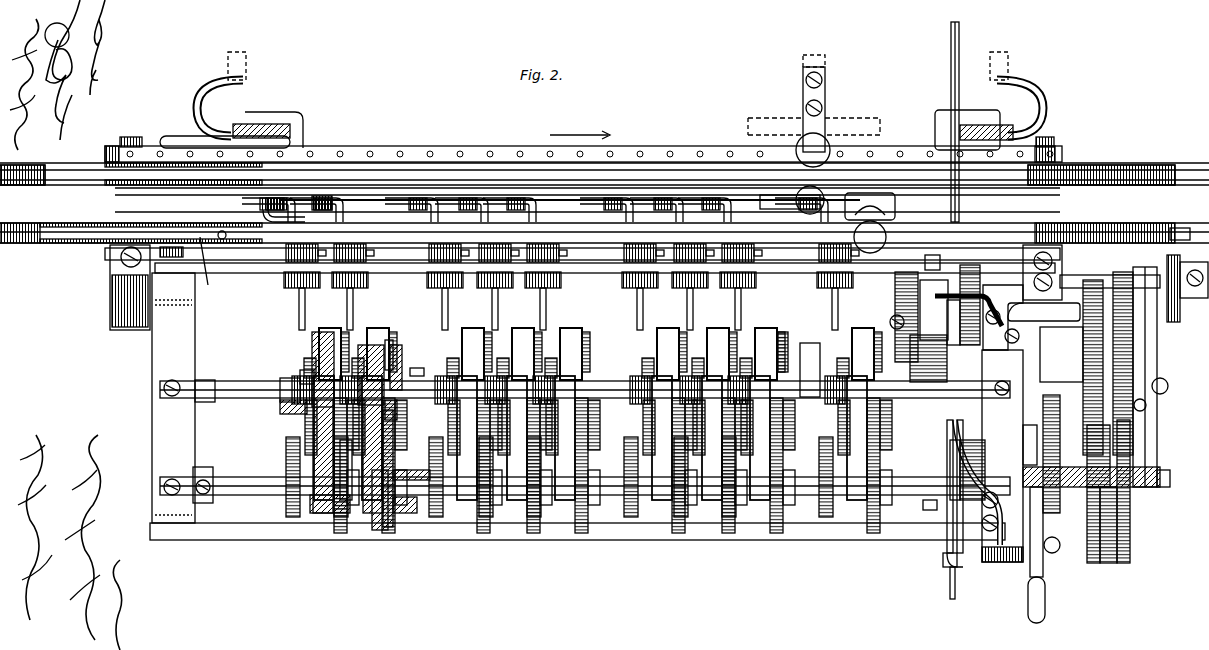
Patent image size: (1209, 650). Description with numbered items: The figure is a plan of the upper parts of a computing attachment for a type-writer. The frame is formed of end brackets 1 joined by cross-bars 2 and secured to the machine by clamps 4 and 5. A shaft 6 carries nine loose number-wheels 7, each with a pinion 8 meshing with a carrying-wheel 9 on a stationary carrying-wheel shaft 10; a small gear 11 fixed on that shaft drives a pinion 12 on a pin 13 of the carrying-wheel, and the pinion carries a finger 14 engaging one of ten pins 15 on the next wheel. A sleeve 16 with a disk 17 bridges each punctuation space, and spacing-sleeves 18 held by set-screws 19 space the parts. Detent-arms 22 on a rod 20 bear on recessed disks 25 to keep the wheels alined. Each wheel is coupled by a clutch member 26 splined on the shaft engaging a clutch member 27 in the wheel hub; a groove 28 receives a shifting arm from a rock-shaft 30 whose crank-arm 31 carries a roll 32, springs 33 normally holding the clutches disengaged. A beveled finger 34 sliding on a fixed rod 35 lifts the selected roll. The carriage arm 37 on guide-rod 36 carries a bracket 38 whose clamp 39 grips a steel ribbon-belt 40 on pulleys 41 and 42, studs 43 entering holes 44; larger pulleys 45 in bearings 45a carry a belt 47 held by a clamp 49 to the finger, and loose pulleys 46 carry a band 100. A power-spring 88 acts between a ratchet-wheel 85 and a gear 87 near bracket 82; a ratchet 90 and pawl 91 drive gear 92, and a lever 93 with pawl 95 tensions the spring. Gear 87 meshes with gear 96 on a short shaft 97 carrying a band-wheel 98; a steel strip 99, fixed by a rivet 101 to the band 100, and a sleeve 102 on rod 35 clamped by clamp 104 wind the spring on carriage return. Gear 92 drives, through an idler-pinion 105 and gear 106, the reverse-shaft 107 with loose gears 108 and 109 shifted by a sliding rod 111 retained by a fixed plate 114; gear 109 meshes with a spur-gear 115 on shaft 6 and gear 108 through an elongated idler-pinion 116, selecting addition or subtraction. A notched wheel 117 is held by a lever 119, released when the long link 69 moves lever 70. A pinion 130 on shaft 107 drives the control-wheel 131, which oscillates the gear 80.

The bracket 1 is at (587, 417).
The cross-bar 2 is at (262, 268).
The clamp 4 is at (300, 125).
The clamp 5 is at (938, 112).
The shaft 6 is at (282, 380).
The number-wheel 7 is at (320, 340).
The pinion 8 is at (345, 330).
The carrying-wheel 9 is at (410, 445).
The carrying-wheel shaft 10 is at (250, 480).
The small gear 11 is at (500, 510).
The pinion 12 is at (380, 530).
The pin 13 is at (330, 445).
The finger 14 is at (312, 435).
The pin 15 is at (392, 330).
The sleeve 16 is at (411, 494).
The disk 17 is at (433, 535).
The spacing-sleeve 18 is at (512, 388).
The set-screw 19 is at (618, 365).
The rod 20 is at (255, 395).
The detent-arm 22 is at (467, 530).
The disk 25 is at (320, 530).
The clutch member 26 is at (305, 365).
The clutch member 27 is at (398, 412).
The peripheral groove 28 is at (292, 415).
The shaft 30 is at (298, 359).
The crank-arm 31 is at (340, 212).
The roll 32 is at (322, 200).
The spring 33 is at (440, 252).
The upright finger 34 is at (780, 210).
The fixed rod 35 is at (572, 210).
The rear carriage guide-rod 36 is at (858, 118).
The arm 37 is at (825, 62).
The bracket 38 is at (803, 95).
The clamp 39 is at (813, 150).
The steel ribbon-belt 40 is at (655, 154).
The pulley 41 is at (118, 146).
The pulley 42 is at (1050, 147).
The peripheral pin 43 is at (105, 154).
The hole 44 is at (518, 154).
The larger pulley 45 is at (587, 172).
The bearing 45a is at (130, 290).
The pulley 46 is at (1165, 225).
The endless steel belt 47 is at (660, 163).
The clamp 49 is at (812, 190).
The long link 69 is at (956, 598).
The lever 70 is at (941, 575).
The gear 80 is at (875, 548).
The bracket 82 is at (1180, 372).
The ratchet-wheel 85 is at (1023, 435).
The gear 87 is at (1090, 563).
The power-spring 88 is at (1061, 454).
The ratchet 90 is at (1105, 563).
The pawl 91 is at (1125, 440).
The gear 92 is at (1130, 540).
The lever 93 is at (1045, 602).
The pawl 95 is at (1029, 523).
The gear 96 is at (1096, 363).
The short shaft 97 is at (1195, 300).
The band-wheel 98 is at (1180, 250).
The steel strip 99 is at (825, 252).
The endless steel band 100 is at (213, 269).
The rivet 101 is at (203, 247).
The sleeve 102 is at (870, 206).
The clamp 104 is at (880, 248).
The idler-pinion 105 is at (1175, 422).
The gear 106 is at (1155, 335).
The reverse-shaft 107 is at (1088, 340).
The gear 108 is at (895, 280).
The gear 109 is at (948, 275).
The sliding rod 111 is at (901, 297).
The fixed plate 114 is at (1044, 312).
The spur-gear 115 is at (962, 445).
The elongated idler-pinion 116 is at (935, 365).
The notched wheel 117 is at (965, 440).
The lever 119 is at (958, 560).
The pinion 130 is at (1003, 323).
The control-wheel 131 is at (973, 417).